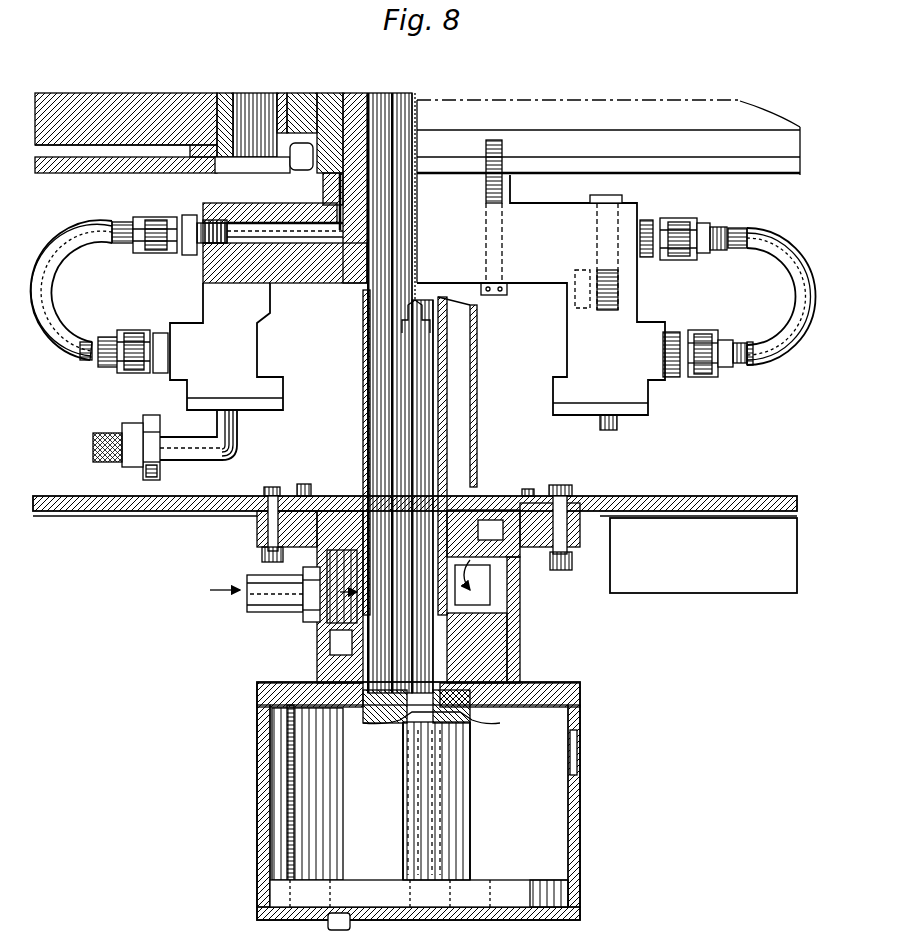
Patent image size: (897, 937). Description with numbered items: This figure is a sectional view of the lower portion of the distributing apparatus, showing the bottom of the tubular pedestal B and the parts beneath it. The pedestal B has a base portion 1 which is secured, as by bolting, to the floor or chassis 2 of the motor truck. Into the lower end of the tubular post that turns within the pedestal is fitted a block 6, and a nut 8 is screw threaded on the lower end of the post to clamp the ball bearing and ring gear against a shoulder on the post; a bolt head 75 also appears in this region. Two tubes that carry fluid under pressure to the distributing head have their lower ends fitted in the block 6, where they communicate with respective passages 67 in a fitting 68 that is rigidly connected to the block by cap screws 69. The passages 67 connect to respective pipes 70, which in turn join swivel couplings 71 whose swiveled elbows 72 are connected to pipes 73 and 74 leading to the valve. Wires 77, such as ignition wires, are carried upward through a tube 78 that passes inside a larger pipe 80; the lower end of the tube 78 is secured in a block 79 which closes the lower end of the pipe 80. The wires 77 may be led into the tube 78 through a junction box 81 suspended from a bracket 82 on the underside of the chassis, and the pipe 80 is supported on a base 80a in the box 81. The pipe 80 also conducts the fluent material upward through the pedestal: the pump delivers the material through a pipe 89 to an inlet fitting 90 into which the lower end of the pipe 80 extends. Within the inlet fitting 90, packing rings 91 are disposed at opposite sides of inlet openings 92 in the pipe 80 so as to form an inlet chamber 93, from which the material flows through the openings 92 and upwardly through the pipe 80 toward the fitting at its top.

The base portion 1 is at (735, 110).
The chassis 2 is at (760, 166).
The pedestal B is at (597, 78).
The block 6 is at (365, 96).
The nut 8 is at (298, 120).
The bolt head 75 is at (315, 155).
The passages 67 is at (300, 237).
The fitting 68 is at (337, 283).
The cap screws 69 is at (500, 293).
The pipes 70 is at (104, 222).
The swivel couplings 71 is at (193, 375).
The swiveled elbows 72 is at (227, 461).
The pipe 73 is at (93, 444).
The pipe 74 is at (112, 462).
The wires 77 is at (420, 493).
The tube 78 is at (448, 407).
The block 79 is at (503, 623).
The pipe 80 is at (363, 443).
The base 80a is at (474, 802).
The junction box 81 is at (533, 823).
The bracket 82 is at (705, 499).
The pipe 89 is at (273, 583).
The inlet fitting 90 is at (520, 597).
The packing rings 91 is at (507, 493).
The inlet openings 92 is at (500, 575).
The inlet chamber 93 is at (500, 613).